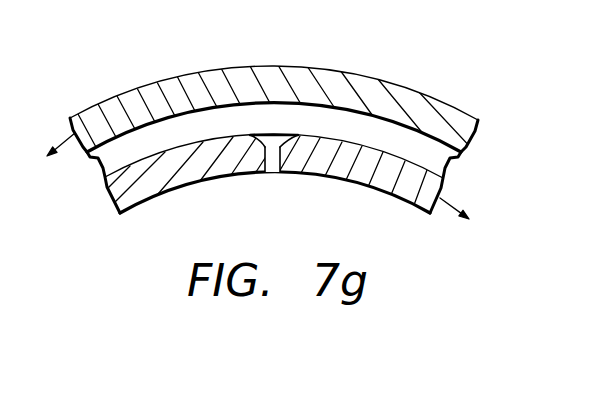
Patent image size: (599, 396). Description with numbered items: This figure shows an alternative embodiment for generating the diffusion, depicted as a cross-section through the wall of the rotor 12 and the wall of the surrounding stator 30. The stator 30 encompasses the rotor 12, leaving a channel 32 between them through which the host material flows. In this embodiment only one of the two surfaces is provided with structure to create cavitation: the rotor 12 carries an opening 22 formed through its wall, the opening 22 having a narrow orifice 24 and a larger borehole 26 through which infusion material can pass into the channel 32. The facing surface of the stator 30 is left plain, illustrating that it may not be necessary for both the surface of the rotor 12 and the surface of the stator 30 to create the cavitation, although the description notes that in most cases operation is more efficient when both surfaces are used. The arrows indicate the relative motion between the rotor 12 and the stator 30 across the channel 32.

The rotor 12 is at (143, 192).
The openings 22 is at (268, 185).
The narrow orifice 24 is at (273, 167).
The borehole 26 is at (272, 134).
The stator 30 is at (327, 76).
The channel 32 is at (98, 158).